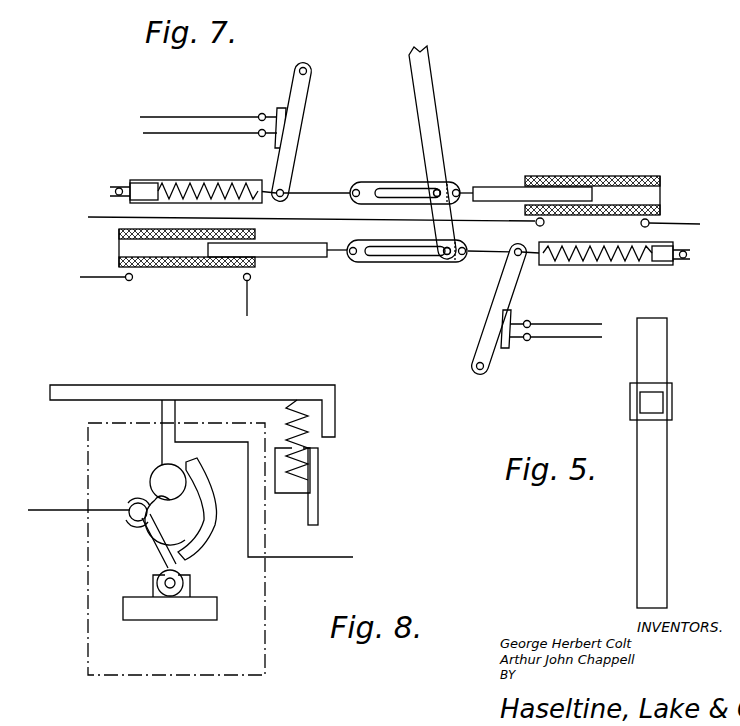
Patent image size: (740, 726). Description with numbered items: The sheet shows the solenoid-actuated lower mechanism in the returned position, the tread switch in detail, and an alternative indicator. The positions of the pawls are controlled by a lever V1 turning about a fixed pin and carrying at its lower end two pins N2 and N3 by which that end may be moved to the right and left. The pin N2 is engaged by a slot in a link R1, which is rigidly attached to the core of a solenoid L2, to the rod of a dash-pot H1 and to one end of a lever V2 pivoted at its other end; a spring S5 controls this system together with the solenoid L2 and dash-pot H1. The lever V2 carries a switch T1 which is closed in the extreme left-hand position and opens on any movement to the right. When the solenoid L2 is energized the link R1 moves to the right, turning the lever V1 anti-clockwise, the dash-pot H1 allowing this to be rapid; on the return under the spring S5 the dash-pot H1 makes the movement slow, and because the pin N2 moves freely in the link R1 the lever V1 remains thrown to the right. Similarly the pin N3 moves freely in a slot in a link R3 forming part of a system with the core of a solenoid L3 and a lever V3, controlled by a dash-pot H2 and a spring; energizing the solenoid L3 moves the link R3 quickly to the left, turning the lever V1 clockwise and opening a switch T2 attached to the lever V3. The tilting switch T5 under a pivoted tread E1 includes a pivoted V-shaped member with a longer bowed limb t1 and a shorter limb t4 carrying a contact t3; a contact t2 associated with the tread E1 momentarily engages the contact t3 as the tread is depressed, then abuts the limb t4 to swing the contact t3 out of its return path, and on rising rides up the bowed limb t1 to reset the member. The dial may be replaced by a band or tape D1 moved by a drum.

In FIG. 7, the switch T1 is at (277, 112).
In FIG. 7, the lever V2 is at (306, 90).
In FIG. 7, the lever V1 is at (427, 90).
In FIG. 7, the pin N2 is at (440, 185).
In FIG. 7, the solenoid L2 is at (623, 176).
In FIG. 7, the dash-pot H1 is at (143, 180).
In FIG. 7, the spring S5 is at (202, 186).
In FIG. 7, the link R1 is at (405, 172).
In FIG. 7, the solenoid L3 is at (200, 265).
In FIG. 7, the link R3 is at (383, 265).
In FIG. 7, the pin N3 is at (444, 264).
In FIG. 7, the lever V3 is at (493, 305).
In FIG. 7, the switch T2 is at (505, 348).
In FIG. 7, the dash-pot H2 is at (623, 267).
In FIG. 8, the tread E1 is at (215, 385).
In FIG. 8, the tilting switch T5 is at (270, 665).
In FIG. 8, the contact t2 is at (155, 470).
In FIG. 8, the contact t3 is at (140, 498).
In FIG. 8, the shorter limb t4 is at (147, 553).
In FIG. 8, the longer bowed limb t1 is at (207, 555).
In FIG. 5, the band or tape D1 is at (637, 562).